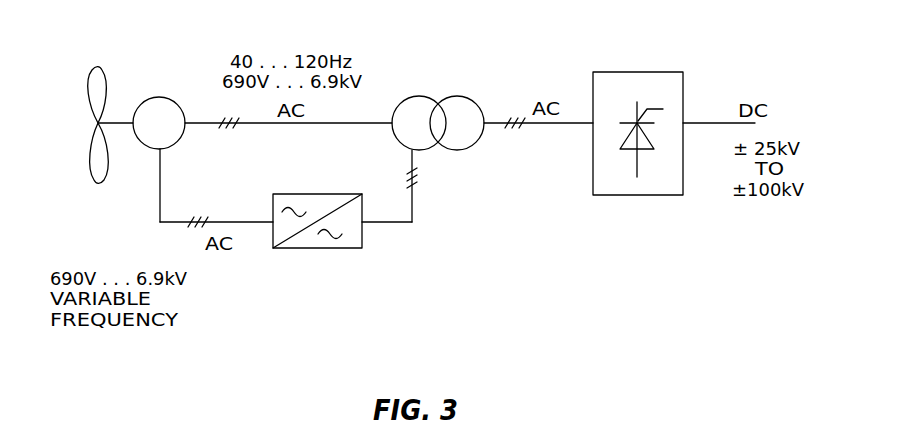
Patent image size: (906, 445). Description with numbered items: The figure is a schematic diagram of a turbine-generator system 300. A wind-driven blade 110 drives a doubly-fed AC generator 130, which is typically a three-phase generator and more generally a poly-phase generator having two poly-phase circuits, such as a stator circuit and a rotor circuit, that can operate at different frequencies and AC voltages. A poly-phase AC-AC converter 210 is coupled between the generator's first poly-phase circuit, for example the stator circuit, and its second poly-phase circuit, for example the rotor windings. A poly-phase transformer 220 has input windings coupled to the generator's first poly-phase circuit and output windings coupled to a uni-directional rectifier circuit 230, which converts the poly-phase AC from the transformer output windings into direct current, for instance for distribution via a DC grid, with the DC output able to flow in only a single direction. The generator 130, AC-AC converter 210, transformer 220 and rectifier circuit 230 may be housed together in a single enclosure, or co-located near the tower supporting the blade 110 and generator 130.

The wind-driven blade 110 is at (87, 157).
The doubly-fed AC generator 130 is at (174, 147).
The poly-phase AC-AC converter 210 is at (365, 237).
The poly-phase transformer 220 is at (463, 150).
The uni-directional rectifier circuit 230 is at (625, 195).
The turbine-generator system 300 is at (612, 295).